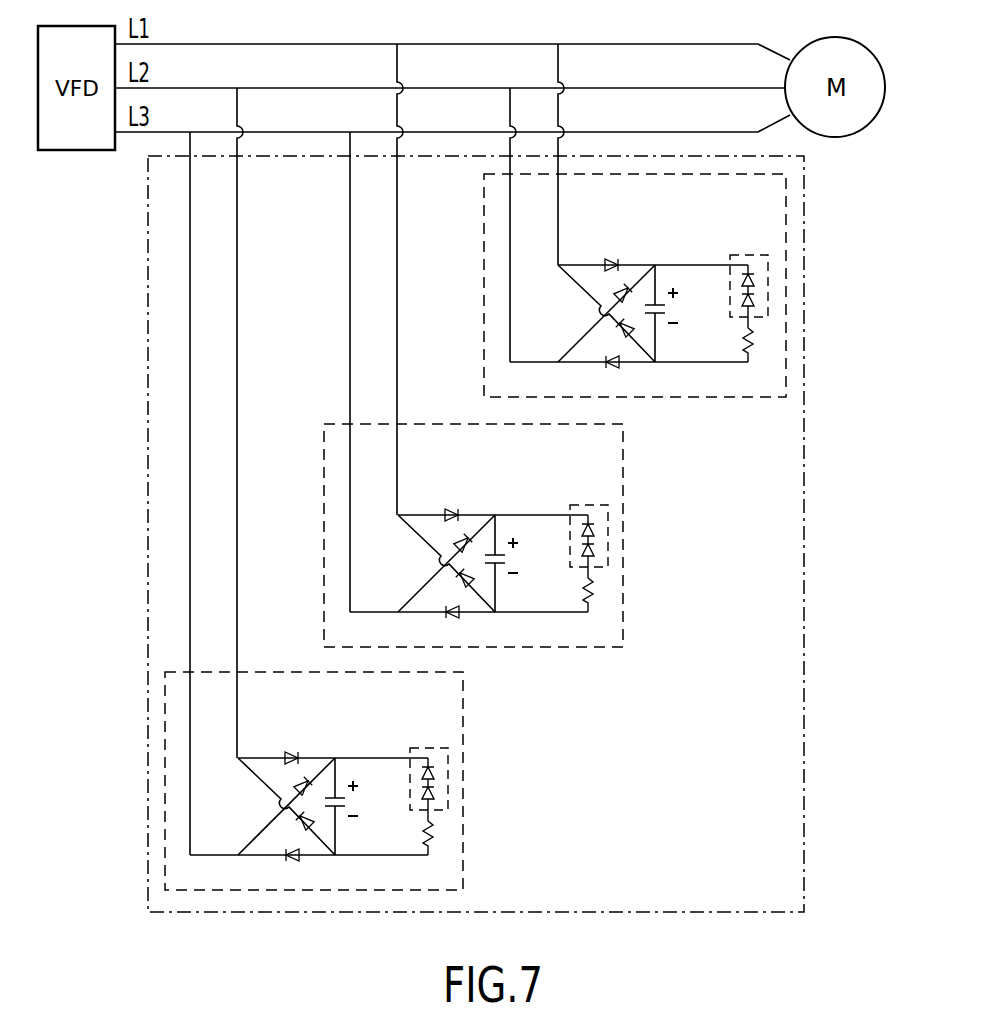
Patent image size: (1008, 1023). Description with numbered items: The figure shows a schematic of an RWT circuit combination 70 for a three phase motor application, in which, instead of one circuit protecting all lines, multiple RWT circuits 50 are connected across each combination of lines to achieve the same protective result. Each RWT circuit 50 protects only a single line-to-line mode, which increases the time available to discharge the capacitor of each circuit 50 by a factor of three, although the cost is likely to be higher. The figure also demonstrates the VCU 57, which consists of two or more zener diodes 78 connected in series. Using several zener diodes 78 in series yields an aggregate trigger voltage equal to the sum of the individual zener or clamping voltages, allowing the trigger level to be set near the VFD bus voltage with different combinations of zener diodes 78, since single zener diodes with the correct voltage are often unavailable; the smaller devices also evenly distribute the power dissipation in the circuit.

The RWT circuit 50 is at (529, 532).
The VCU 57 is at (784, 262).
The RWT circuit combination 70 is at (148, 517).
The zener diode 78 is at (757, 282).